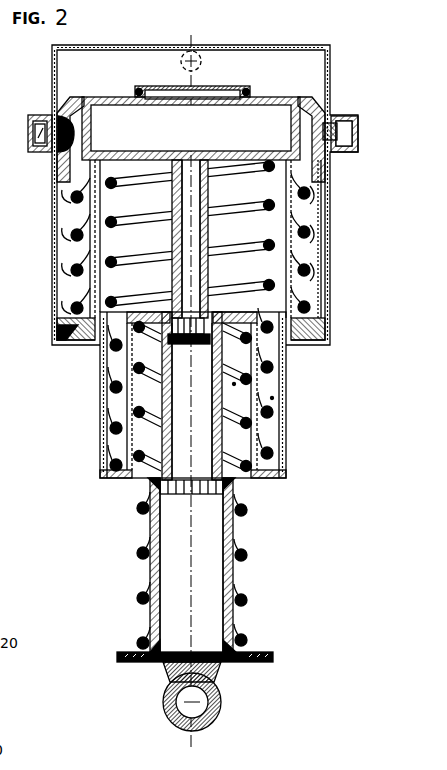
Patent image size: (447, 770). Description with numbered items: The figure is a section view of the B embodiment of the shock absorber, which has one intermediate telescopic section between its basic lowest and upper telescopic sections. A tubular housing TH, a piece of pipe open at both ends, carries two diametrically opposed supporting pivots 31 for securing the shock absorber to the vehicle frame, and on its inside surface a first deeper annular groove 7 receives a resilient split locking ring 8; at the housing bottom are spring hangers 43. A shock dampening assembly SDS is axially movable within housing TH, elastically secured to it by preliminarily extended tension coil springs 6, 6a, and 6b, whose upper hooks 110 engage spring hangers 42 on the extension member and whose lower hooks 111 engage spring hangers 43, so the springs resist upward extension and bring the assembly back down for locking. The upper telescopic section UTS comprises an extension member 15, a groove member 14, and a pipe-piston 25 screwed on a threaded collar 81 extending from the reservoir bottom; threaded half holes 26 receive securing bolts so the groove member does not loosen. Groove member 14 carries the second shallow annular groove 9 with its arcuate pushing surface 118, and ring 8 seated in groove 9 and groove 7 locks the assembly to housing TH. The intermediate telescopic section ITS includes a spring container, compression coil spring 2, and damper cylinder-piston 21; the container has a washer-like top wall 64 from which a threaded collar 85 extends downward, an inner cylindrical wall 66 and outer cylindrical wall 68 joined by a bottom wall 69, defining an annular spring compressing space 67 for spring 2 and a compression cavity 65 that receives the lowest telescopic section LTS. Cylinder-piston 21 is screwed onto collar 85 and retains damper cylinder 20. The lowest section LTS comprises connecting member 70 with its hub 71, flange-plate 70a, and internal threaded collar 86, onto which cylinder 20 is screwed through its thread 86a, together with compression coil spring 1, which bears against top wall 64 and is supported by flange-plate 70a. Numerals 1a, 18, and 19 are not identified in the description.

The B embodiment B is at (188, 377).
The tubular housing TH is at (326, 70).
The shock dampening assembly SDS is at (165, 84).
The upper telescopic section UTS is at (116, 472).
The intermediate telescopic section ITS is at (118, 486).
The lowest telescopic section LTS is at (149, 534).
The compression coil spring 1 is at (247, 509).
The coil spring turn 1a is at (247, 554).
The compression coil spring 2 is at (263, 416).
The tension coil spring 6 is at (318, 180).
The tension coil spring 6a is at (306, 213).
The side spring coil 6b is at (306, 253).
The first deeper annular groove 7 is at (42, 137).
The resilient split locking ring 8 is at (32, 124).
The second shallow annular groove 9 is at (56, 116).
The groove member 14 is at (75, 97).
The extension member 15 is at (140, 93).
The element 18 is at (9, 720).
The element 19 is at (9, 615).
The damper cylinder 20 is at (161, 534).
The damper cylinder-piston 21 is at (170, 432).
The pipe-piston 25 is at (203, 230).
The threaded half holes 26 is at (303, 100).
The supporting pivots 31 is at (200, 63).
The spring hangers 42 is at (72, 182).
The spring hangers 43 is at (62, 317).
The top wall 64 is at (256, 341).
The compression cavity 65 is at (234, 384).
The inner cylindrical wall 66 is at (262, 390).
The annular spring compressing space 67 is at (272, 398).
The outer cylindrical wall 68 is at (284, 426).
The bottom wall 69 is at (268, 480).
The connecting member 70 is at (216, 670).
The flange-plate 70a is at (126, 662).
The hub 71 is at (165, 703).
The threaded collar 81 is at (186, 160).
The threaded collar 85 is at (189, 349).
The threaded collar 86 is at (238, 642).
The thread 86a is at (228, 642).
The upper hooks 110 is at (70, 176).
The lower hooks 111 is at (85, 344).
The pushing surface 118 is at (62, 152).